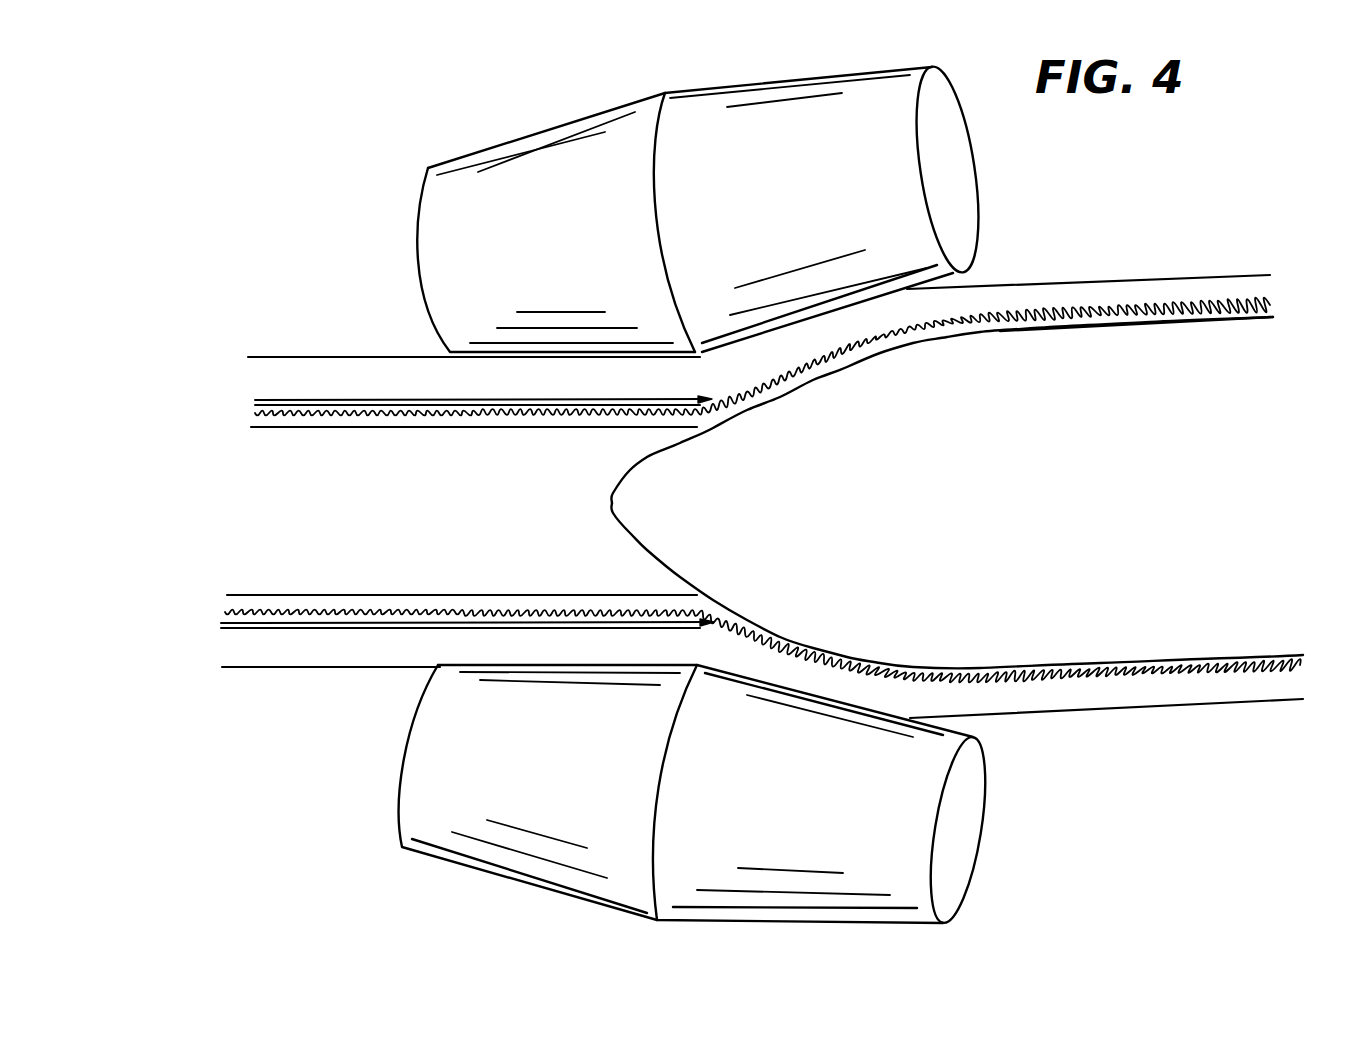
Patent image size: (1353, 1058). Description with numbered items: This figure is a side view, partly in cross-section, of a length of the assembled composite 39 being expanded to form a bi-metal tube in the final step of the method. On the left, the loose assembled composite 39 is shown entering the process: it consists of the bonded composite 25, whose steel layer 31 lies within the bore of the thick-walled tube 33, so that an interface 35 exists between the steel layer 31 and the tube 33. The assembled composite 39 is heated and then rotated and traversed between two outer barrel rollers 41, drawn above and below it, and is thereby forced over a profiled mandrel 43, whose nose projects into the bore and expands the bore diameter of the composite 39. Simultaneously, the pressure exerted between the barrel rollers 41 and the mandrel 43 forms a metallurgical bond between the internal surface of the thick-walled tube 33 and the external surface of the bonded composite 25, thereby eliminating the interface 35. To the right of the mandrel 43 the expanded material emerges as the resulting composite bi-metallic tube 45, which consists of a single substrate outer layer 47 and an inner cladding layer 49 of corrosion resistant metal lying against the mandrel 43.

The bonded composite 25 is at (218, 612).
The steel layer 31 is at (255, 413).
The thick-walled tube 33 is at (278, 380).
The interface 35 is at (218, 625).
The assembled composite 39 is at (300, 353).
The barrel rollers 41 is at (450, 247).
The profiled mandrel 43 is at (1208, 427).
The composite bi-metallic tube 45 is at (1035, 285).
The substrate outer layer 47 is at (1238, 292).
The inner cladding layer 49 is at (1273, 315).